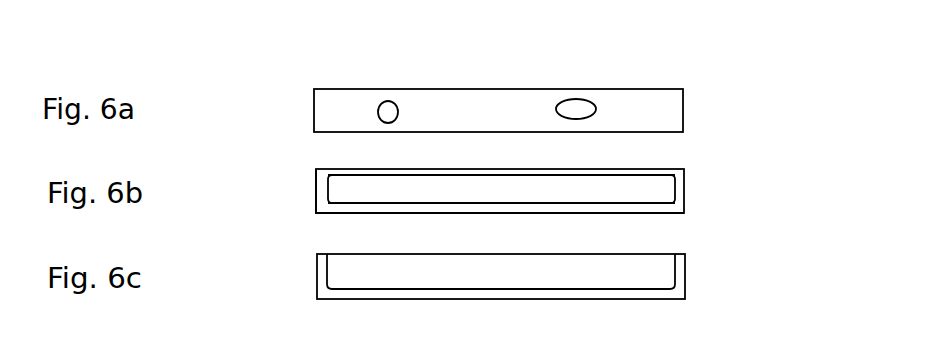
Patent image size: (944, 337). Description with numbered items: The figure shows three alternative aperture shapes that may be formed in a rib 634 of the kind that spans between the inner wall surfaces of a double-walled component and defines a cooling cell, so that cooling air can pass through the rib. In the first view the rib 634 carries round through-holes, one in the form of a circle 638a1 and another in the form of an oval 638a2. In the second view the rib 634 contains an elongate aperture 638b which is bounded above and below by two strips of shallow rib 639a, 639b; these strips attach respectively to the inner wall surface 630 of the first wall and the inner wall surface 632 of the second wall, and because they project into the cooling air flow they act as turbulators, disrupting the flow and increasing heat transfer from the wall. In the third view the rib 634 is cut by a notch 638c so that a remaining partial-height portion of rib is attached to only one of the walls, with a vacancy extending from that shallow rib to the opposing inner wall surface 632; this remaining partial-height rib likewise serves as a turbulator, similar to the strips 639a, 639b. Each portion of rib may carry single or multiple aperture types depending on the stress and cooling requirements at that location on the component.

In FIG. 6B, the inner wall surface of the first wall 630 is at (620, 163).
In FIG. 6B, the inner wall surface of the second wall 632 is at (617, 214).
In FIG. 6A, the rib 634 is at (340, 109).
In FIG. 6B, the rib 634 is at (322, 190).
In FIG. 6C, the rib 634 is at (325, 270).
In FIG. 6A, the circle 638a1 is at (388, 101).
In FIG. 6A, the oval 638a2 is at (574, 100).
In FIG. 6B, the elongate aperture 638b is at (380, 183).
In FIG. 6C, the notch 638c is at (600, 279).
In FIG. 6B, the shallow rib strip 639a is at (650, 170).
In FIG. 6B, the shallow rib strip 639b is at (658, 209).